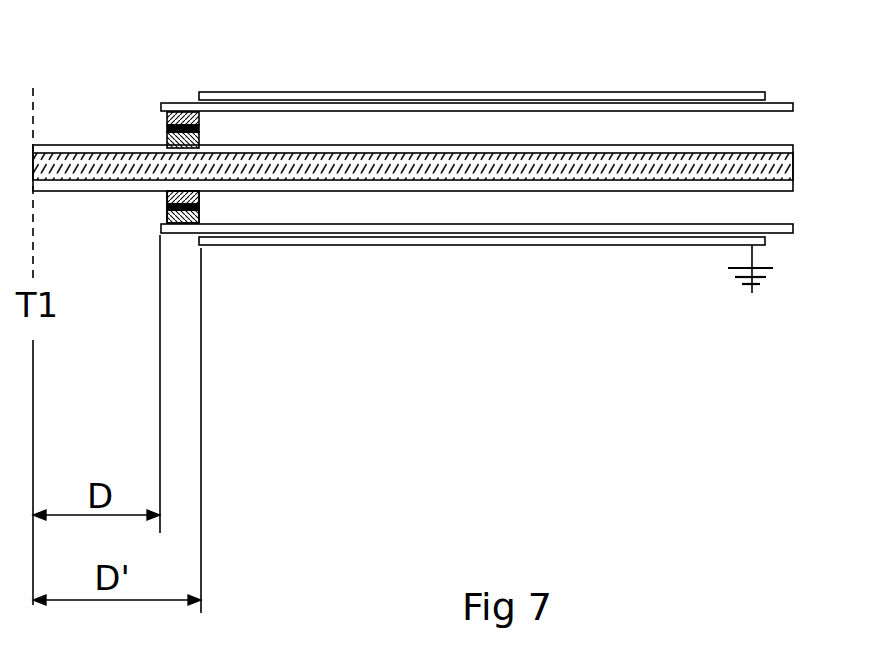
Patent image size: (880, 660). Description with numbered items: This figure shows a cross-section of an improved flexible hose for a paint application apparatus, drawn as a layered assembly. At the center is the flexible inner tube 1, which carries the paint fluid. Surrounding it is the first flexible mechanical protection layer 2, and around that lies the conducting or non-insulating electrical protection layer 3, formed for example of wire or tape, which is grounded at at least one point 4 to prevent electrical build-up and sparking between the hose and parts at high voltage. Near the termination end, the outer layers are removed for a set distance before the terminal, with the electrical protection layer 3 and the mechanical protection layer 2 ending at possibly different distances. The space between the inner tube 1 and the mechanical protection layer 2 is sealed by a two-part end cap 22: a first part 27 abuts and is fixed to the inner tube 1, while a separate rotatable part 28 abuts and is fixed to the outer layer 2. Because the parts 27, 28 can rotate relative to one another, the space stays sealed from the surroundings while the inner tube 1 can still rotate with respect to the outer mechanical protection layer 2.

The inner tube 1 is at (641, 239).
The first flexible mechanical protection layer 2 is at (538, 225).
The electrical protection layer 3 is at (418, 188).
The grounding point 4 is at (750, 309).
The end cap 22 is at (152, 213).
The first part of end cap 27 is at (165, 146).
The rotatable part of end cap 28 is at (162, 118).